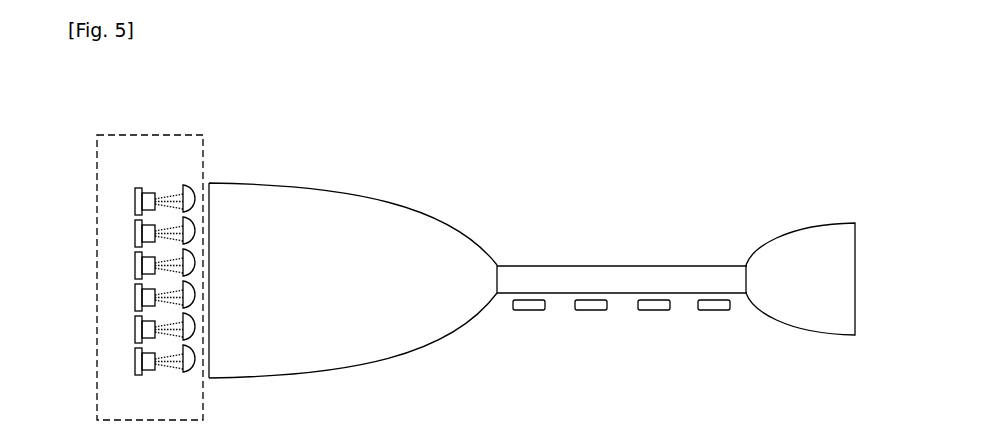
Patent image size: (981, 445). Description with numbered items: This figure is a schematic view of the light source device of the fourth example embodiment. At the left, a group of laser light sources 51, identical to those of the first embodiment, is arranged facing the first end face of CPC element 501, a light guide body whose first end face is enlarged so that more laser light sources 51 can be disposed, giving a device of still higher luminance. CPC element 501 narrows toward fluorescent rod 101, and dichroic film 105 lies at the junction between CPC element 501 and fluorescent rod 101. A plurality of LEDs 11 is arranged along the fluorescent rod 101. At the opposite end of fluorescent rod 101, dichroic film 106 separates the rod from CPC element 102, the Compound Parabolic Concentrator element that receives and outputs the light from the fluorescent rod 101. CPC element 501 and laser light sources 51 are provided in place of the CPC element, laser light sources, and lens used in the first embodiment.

The laser light sources 51 is at (177, 138).
The CPC element 501 is at (313, 194).
The dichroic film 105 is at (495, 283).
The fluorescent rod 101 is at (657, 267).
The LEDs 11 is at (532, 308).
The CPC element 102 is at (842, 232).
The dichroic film 106 is at (748, 273).